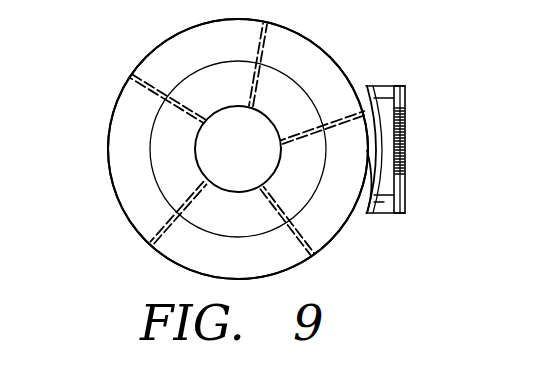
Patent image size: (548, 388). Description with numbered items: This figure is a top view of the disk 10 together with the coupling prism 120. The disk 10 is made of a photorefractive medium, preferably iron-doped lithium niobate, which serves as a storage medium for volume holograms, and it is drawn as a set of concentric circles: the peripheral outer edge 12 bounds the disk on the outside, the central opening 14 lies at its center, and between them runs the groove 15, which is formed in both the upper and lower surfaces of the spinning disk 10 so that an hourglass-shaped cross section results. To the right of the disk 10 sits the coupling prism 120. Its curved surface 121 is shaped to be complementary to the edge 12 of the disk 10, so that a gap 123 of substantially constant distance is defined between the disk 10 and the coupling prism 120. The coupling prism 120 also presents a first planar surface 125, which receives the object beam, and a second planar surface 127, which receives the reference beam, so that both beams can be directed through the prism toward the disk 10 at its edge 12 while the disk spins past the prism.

The disk 10 is at (114, 226).
The peripheral outer edge 12 is at (151, 53).
The central opening 14 is at (231, 108).
The groove 15 is at (213, 64).
The coupling prism 120 is at (405, 165).
The curved surface 121 is at (362, 90).
The gap 123 is at (362, 212).
The first planar surface 125 is at (405, 103).
The second planar surface 127 is at (405, 196).